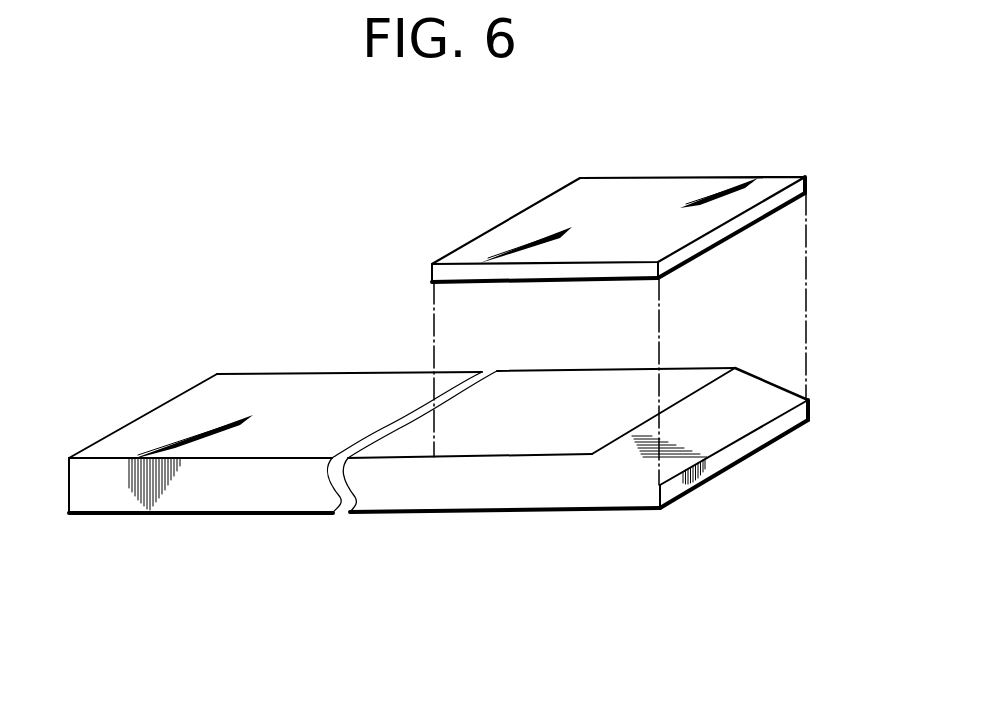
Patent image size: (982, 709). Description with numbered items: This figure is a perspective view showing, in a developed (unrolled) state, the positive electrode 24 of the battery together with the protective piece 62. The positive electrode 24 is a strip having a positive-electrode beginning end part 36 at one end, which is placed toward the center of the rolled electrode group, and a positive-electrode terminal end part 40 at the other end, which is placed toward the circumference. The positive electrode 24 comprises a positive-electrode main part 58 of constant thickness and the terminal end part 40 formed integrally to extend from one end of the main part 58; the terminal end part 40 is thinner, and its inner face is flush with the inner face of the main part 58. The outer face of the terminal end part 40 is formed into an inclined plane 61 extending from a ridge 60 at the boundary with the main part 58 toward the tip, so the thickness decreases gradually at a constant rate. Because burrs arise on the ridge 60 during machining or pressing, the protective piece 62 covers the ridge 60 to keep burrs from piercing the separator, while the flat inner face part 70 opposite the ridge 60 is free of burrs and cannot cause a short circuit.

The positive electrode 24 is at (750, 514).
The positive-electrode beginning end part 36 is at (95, 493).
The positive-electrode terminal end part 40 is at (642, 490).
The positive-electrode main part 58 is at (386, 513).
The ridge 60 is at (695, 390).
The inclined plane 61 is at (738, 425).
The protective piece 62 is at (635, 194).
The inner face part 70 is at (588, 513).